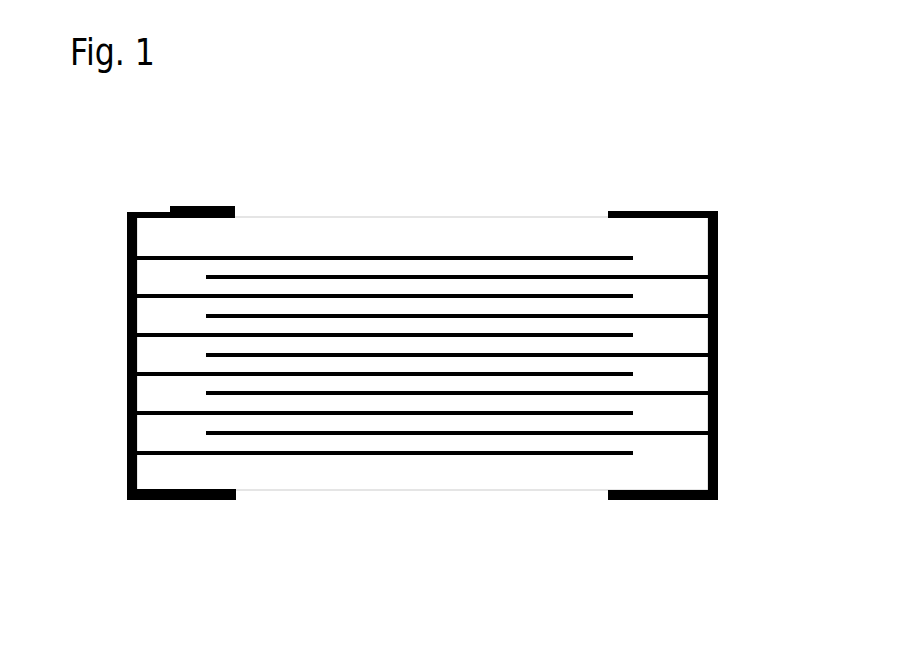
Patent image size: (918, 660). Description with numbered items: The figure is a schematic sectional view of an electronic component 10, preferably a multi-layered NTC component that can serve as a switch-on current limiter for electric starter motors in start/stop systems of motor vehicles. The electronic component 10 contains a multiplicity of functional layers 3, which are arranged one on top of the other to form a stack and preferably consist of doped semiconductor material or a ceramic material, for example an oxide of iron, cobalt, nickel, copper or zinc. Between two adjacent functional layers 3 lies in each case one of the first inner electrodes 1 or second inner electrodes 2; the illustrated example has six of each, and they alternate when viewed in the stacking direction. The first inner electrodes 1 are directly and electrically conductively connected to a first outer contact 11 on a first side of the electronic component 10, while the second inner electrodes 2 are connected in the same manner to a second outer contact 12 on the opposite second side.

The electronic component 10 is at (442, 157).
The first inner electrodes 1 is at (150, 410).
The second inner electrodes 2 is at (662, 390).
The functional layers 3 is at (573, 437).
The first outer contact 11 is at (127, 230).
The second outer contact 12 is at (718, 213).